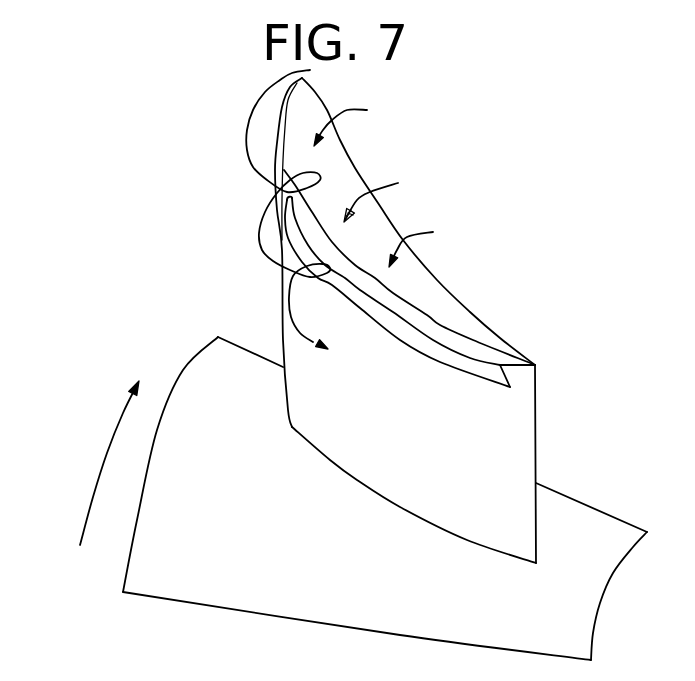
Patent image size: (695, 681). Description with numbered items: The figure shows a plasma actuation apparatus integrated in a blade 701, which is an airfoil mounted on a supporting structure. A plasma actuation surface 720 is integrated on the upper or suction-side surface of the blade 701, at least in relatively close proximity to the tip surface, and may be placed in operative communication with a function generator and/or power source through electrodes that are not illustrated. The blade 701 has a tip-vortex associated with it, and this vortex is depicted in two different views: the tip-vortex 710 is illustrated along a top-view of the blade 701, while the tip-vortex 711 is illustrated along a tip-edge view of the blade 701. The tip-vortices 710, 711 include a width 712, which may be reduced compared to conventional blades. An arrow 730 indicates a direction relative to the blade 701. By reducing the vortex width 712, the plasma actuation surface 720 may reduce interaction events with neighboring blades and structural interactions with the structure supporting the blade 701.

The blade 701 is at (523, 448).
The tip-vortex 710 is at (247, 137).
The tip-vortex 711 is at (398, 183).
The width 712 is at (377, 330).
The plasma actuation surface 720 is at (485, 374).
The direction of rotation 730 is at (97, 497).